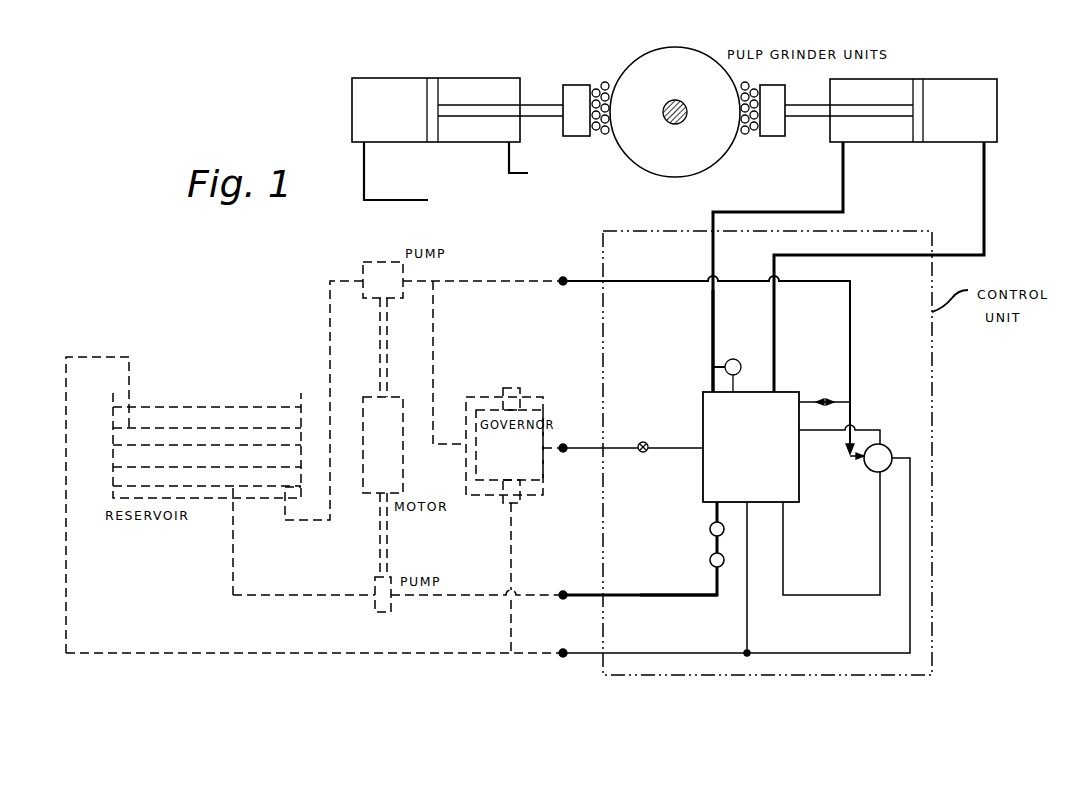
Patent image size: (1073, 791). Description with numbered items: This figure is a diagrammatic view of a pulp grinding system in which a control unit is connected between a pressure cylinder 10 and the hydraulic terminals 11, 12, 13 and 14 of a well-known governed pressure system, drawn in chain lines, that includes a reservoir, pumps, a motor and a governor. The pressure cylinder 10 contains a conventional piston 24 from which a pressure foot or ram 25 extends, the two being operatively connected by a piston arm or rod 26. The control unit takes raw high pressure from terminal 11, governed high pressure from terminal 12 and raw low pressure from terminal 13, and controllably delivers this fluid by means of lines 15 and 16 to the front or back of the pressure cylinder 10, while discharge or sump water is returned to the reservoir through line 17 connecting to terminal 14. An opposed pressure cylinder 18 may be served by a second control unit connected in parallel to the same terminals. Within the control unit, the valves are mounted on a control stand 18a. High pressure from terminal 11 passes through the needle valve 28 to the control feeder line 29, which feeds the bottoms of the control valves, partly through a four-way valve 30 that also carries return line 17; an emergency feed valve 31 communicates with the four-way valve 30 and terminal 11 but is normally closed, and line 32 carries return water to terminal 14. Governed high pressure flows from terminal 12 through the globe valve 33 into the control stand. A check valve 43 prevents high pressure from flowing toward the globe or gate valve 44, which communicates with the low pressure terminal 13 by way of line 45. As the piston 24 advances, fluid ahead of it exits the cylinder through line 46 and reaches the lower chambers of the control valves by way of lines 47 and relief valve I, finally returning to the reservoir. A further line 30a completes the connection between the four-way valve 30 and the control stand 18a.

The pressure cylinder 10 is at (998, 100).
The hydraulic terminal 11 is at (704, 355).
The hydraulic terminal 12 is at (631, 439).
The hydraulic terminal 13 is at (638, 550).
The hydraulic terminal 14 is at (653, 644).
The line 15 is at (810, 208).
The line 16 is at (984, 188).
The return line 17 is at (603, 674).
The pressure cylinder 18 is at (352, 107).
The control stand 18a is at (703, 487).
The piston 24 is at (923, 100).
The pressure foot or ram 25 is at (769, 134).
The piston arm or rod 26 is at (888, 106).
The needle valve 28 is at (826, 401).
The control feeder line 29 is at (868, 429).
The four-way valve 30 is at (889, 447).
The connecting line 30a is at (880, 549).
The emergency feed valve 31 is at (850, 460).
The line 32 is at (747, 630).
The globe valve 33 is at (647, 442).
The check valve 43 is at (710, 530).
The globe or gate valve 44 is at (710, 561).
The line 45 is at (664, 592).
The line 46 is at (712, 340).
The lines 47 is at (712, 378).